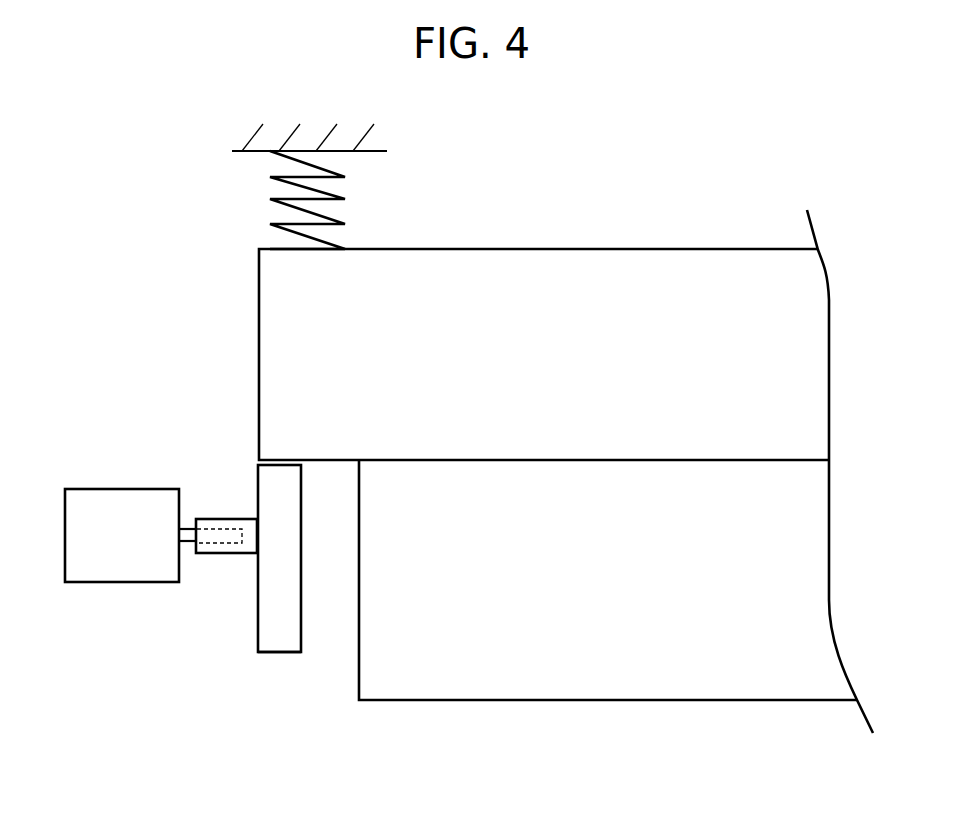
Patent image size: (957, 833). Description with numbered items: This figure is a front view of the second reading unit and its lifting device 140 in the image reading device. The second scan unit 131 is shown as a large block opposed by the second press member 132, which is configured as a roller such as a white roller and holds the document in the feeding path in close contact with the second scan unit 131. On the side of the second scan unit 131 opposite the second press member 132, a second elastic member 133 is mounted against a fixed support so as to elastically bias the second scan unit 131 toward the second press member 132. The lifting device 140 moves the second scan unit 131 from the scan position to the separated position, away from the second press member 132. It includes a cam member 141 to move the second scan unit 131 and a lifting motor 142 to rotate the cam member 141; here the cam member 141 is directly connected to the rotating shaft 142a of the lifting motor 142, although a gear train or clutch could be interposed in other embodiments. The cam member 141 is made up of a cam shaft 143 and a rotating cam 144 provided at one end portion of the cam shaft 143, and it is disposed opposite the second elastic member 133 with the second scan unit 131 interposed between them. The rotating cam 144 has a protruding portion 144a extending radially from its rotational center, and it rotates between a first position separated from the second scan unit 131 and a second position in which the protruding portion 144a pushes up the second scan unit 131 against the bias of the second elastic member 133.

The second scan unit 131 is at (570, 263).
The second press member 132 is at (575, 683).
The second elastic member 133 is at (270, 197).
The lifting device 140 is at (201, 610).
The cam member 141 is at (252, 629).
The lifting motor 142 is at (108, 495).
The rotating shaft 142a is at (193, 529).
The cam shaft 143 is at (222, 553).
The rotating cam 144 is at (293, 622).
The protruding portion 144a is at (264, 692).